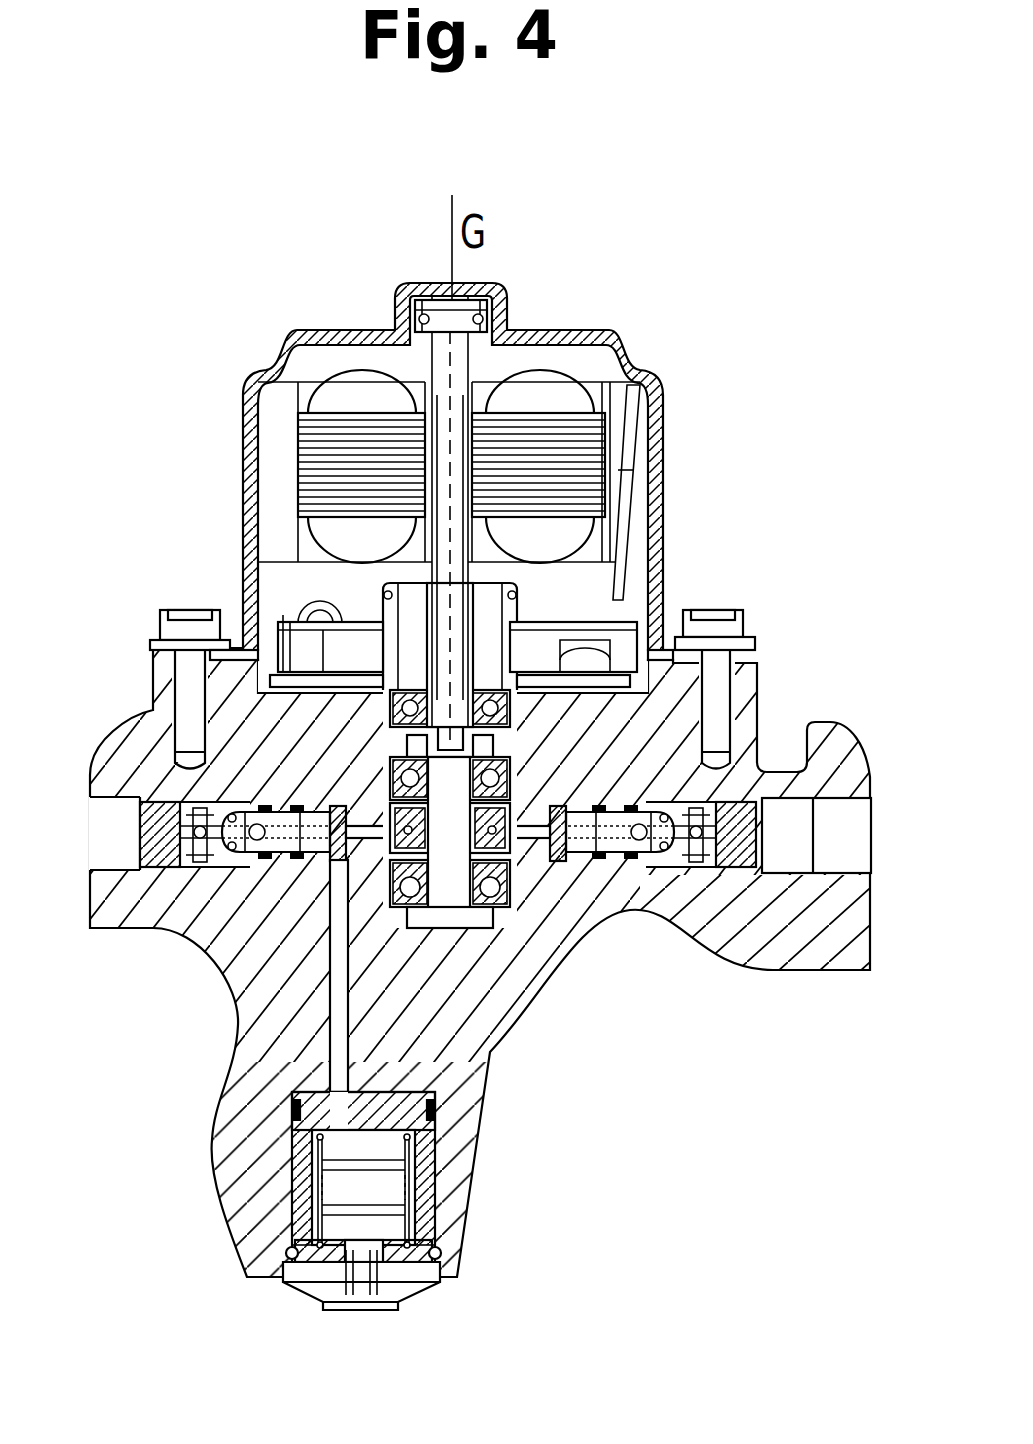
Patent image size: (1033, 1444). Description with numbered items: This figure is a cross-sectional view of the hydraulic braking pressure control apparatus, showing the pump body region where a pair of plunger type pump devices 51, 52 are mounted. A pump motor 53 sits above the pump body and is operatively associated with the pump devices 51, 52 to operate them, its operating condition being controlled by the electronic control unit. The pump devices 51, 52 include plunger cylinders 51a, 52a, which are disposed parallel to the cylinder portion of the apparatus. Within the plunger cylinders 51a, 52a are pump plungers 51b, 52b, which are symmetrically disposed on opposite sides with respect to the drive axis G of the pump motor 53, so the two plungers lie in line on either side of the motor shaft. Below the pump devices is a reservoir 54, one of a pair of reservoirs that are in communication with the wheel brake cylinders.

The pump device 51 is at (292, 903).
The plunger cylinder 51a is at (305, 813).
The pump plunger 51b is at (283, 866).
The pump device 52 is at (622, 806).
The plunger cylinder 52a is at (590, 853).
The pump plunger 52b is at (617, 853).
The pump motor 53 is at (670, 473).
The reservoir 54 is at (284, 1177).